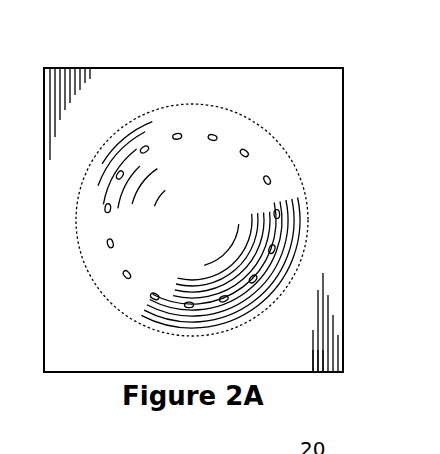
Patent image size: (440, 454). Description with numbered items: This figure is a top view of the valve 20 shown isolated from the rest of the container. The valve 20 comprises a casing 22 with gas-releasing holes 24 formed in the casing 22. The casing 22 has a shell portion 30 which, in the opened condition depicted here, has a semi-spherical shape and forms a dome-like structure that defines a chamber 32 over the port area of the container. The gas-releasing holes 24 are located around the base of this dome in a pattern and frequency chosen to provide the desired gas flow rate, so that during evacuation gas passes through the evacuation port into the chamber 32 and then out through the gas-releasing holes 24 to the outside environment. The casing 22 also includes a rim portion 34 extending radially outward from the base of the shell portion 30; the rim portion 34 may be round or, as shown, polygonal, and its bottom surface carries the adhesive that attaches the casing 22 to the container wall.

The valve 20 is at (368, 101).
The casing 22 is at (320, 308).
The gas-releasing holes 24 is at (280, 212).
The shell portion 30 is at (200, 183).
The chamber 32 is at (166, 166).
The rim portion 34 is at (320, 345).